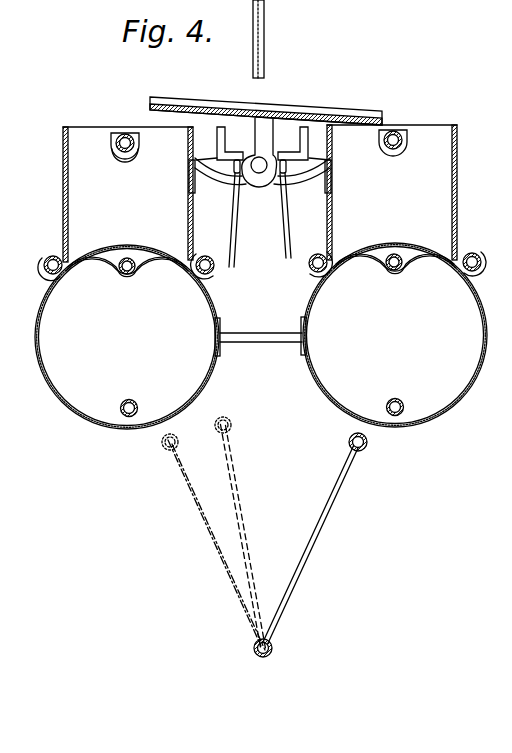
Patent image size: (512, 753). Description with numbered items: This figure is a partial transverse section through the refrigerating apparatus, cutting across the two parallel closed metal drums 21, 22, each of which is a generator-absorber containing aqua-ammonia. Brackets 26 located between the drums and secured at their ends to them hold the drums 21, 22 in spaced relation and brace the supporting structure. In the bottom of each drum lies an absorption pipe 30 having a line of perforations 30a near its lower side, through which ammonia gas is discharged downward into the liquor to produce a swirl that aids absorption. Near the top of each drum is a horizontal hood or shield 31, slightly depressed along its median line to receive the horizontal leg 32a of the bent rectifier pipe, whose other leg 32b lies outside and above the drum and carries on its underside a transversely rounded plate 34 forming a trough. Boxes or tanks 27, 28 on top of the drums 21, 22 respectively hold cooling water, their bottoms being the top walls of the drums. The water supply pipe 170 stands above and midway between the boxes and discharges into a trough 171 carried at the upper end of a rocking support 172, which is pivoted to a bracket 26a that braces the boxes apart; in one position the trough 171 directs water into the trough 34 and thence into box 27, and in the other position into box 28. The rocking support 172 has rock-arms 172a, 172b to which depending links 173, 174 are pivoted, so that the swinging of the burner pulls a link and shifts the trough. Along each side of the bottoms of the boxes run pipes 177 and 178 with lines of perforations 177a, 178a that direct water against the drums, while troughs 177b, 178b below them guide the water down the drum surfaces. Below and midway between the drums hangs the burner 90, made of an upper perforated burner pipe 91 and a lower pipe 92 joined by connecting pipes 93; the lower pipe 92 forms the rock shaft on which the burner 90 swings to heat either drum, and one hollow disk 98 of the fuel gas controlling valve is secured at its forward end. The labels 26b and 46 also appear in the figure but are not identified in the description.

The pipe or conduit 170 is at (266, 58).
The trough 171 is at (191, 99).
The rocking support 172 is at (268, 130).
The rock-arm 172a is at (252, 180).
The rock-arm 172b is at (283, 180).
The depending link 173 is at (236, 231).
The depending link 174 is at (285, 246).
The longitudinally extending pipe 177 is at (312, 256).
The line of perforations 177a is at (332, 258).
The trough 177b is at (387, 269).
The longitudinally extending pipe 178 is at (49, 258).
The line of perforations 178a is at (68, 263).
The trough 178b is at (44, 267).
The bracket 26 is at (285, 332).
The bracket 26a is at (208, 174).
The side plate 26b is at (215, 143).
The box or tank 27 is at (458, 197).
The box or tank 28 is at (63, 208).
The horizontal leg 32a is at (127, 257).
The inclined leg 32b is at (122, 138).
The plate 34 is at (124, 152).
The hood or shield 31 is at (108, 275).
The drum 21 is at (487, 313).
The drum 22 is at (38, 305).
The absorption pipe 30 is at (131, 399).
The line of perforations 30a is at (120, 413).
The burner 90 is at (289, 636).
The upper pipe 91 is at (368, 444).
The lower pipe 92 is at (273, 647).
The pipe 93 is at (338, 491).
The hollow disk 98 is at (9, 640).
The part of adjacent figure 46 is at (0, 664).